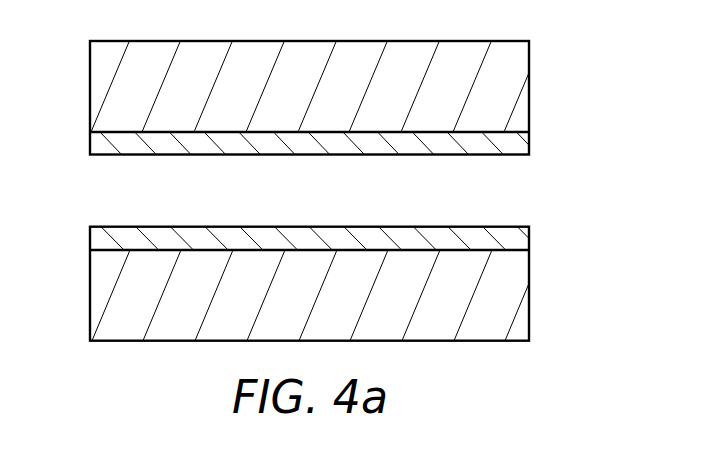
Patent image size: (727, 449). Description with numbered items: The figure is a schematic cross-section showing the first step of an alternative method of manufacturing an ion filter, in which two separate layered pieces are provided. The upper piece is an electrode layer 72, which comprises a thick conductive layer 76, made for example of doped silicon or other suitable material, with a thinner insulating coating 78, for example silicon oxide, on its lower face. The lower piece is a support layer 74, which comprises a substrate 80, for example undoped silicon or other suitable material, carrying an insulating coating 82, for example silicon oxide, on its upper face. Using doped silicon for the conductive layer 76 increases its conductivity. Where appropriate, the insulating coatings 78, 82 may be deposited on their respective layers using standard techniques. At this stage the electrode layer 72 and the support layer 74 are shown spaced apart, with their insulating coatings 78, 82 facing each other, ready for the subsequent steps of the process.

The electrode layer 72 is at (548, 47).
The support layer 74 is at (70, 232).
The conductive layer 76 is at (100, 86).
The insulating coating 78 is at (520, 144).
The substrate 80 is at (100, 296).
The insulating coating 82 is at (520, 240).